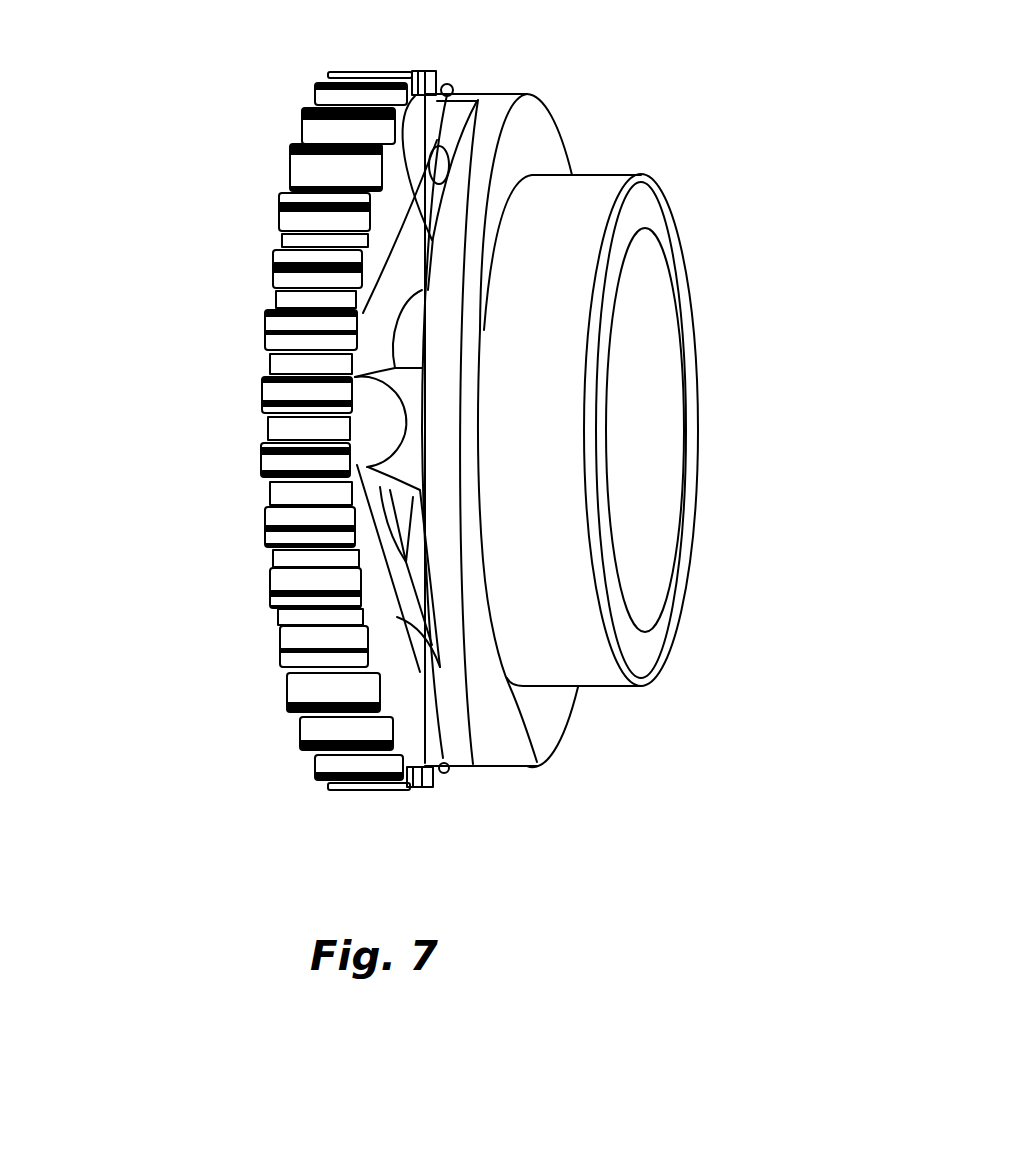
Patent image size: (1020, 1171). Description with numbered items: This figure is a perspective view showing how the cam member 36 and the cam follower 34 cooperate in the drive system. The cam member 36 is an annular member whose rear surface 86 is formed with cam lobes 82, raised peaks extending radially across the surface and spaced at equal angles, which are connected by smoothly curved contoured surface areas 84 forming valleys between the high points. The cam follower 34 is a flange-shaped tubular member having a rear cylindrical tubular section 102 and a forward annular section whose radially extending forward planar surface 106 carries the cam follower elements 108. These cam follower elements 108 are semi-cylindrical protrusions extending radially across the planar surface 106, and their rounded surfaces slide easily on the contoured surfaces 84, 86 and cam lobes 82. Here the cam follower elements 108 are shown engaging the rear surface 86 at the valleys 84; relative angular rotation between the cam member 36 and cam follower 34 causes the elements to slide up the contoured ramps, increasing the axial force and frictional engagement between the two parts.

The cam follower 34 is at (623, 712).
The cam member 36 is at (268, 742).
The cam lobes 82 is at (380, 192).
The contoured surface areas 84 is at (273, 310).
The rear surface 86 is at (392, 292).
The rear cylindrical tubular section 102 is at (558, 233).
The forward planar surface 106 is at (453, 148).
The cam follower elements 108 is at (453, 92).